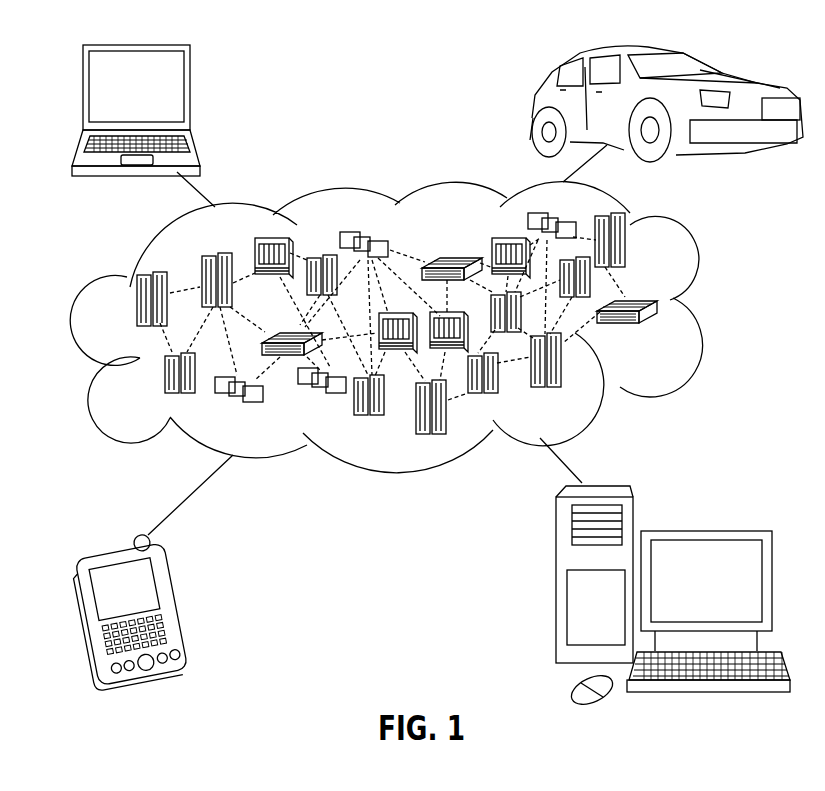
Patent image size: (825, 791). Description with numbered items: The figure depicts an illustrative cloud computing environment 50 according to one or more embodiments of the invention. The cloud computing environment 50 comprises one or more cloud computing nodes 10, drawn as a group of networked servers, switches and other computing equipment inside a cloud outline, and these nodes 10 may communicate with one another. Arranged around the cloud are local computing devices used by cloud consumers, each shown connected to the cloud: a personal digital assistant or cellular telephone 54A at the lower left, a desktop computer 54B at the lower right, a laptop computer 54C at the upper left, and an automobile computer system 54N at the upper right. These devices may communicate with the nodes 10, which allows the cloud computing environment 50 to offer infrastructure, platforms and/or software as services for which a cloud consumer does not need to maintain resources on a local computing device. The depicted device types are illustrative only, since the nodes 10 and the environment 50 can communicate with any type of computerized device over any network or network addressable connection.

The cloud computing node 10 is at (662, 329).
The cloud computing environment 50 is at (706, 306).
The personal digital assistant (PDA) or cellular telephone 54A is at (185, 607).
The desktop computer 54B is at (706, 530).
The laptop computer 54C is at (193, 93).
The automobile computer system 54N is at (535, 108).